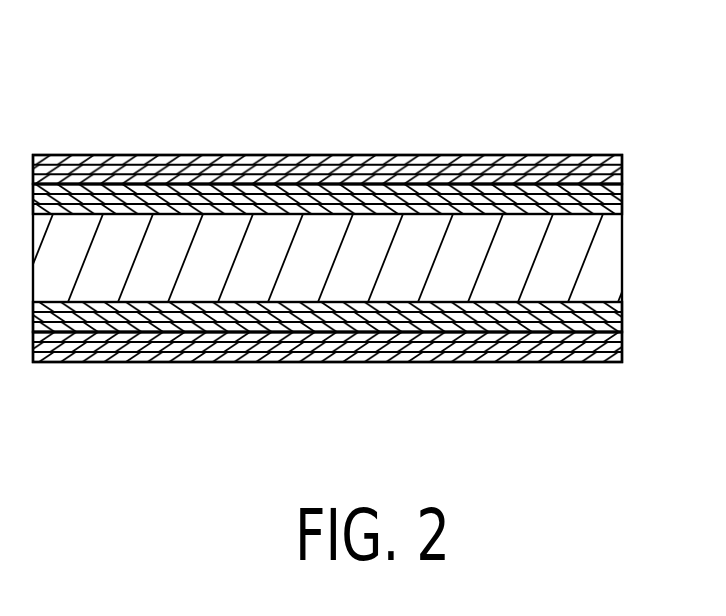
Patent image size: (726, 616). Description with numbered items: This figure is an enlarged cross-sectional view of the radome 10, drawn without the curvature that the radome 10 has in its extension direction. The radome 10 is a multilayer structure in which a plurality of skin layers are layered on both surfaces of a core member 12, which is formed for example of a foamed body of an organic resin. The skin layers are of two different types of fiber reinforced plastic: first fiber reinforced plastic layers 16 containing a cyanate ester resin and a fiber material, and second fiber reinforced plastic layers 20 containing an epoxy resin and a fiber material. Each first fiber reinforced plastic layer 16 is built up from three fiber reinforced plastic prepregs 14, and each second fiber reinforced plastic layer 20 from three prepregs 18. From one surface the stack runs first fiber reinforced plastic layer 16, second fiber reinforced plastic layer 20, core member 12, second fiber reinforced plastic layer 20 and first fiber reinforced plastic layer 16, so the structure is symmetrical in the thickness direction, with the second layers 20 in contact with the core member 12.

The radome 10 is at (444, 82).
The core member 12 is at (608, 250).
The fiber reinforced plastic prepreg 14 is at (622, 160).
The first fiber reinforced plastic layer 16 is at (679, 98).
The fiber reinforced plastic prepreg 18 is at (622, 189).
The second fiber reinforced plastic layer 20 is at (679, 178).